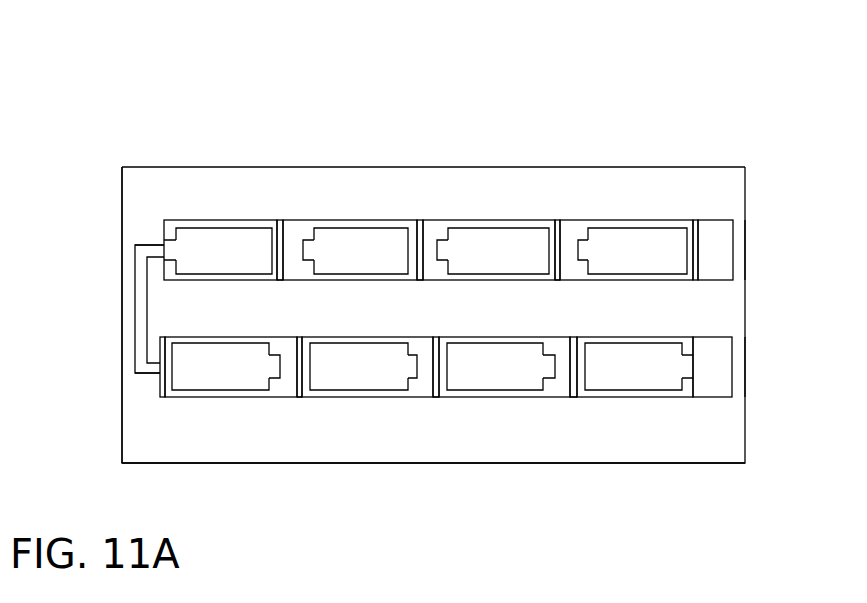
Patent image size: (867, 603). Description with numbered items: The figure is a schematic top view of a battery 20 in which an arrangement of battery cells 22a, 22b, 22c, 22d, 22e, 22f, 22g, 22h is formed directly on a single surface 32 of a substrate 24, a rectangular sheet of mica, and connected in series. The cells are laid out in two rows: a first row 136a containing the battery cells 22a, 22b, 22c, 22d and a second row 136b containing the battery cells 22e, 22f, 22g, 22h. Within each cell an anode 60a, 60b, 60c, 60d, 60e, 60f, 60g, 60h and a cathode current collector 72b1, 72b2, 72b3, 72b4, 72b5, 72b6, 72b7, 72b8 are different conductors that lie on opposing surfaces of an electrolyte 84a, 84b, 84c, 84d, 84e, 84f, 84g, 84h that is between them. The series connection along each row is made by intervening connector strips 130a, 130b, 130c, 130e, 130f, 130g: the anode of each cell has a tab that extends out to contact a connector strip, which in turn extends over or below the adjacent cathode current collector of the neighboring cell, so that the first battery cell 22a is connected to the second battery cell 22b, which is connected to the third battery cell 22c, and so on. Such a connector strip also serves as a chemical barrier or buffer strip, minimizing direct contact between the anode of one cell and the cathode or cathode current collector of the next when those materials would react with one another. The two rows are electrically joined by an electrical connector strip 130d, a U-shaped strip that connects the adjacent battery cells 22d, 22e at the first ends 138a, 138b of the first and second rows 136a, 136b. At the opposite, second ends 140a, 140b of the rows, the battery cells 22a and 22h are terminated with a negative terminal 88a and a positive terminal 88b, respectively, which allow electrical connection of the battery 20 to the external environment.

The battery 20 is at (740, 71).
The substrate 24 is at (163, 455).
The substrate surface 32 is at (465, 181).
The first row 136a is at (617, 448).
The second row 136b is at (203, 193).
The first end of first row 138a is at (126, 386).
The first end of second row 138b is at (140, 221).
The electrical connector strip 130d is at (148, 278).
The first battery cell 22a is at (649, 384).
The second battery cell 22b is at (505, 384).
The third battery cell 22c is at (367, 384).
The battery cell 22d is at (231, 383).
The battery cell 22e is at (220, 243).
The battery cell 22f is at (350, 242).
The battery cell 22g is at (489, 242).
The battery cell 22h is at (633, 242).
The anode 60a is at (615, 378).
The anode 60b is at (477, 378).
The anode 60c is at (342, 378).
The anode 60d is at (202, 378).
The anode 60e is at (206, 261).
The anode 60f is at (345, 261).
The anode 60g is at (480, 261).
The anode 60h is at (619, 261).
The electrolyte 84a is at (665, 340).
The electrolyte 84b is at (520, 343).
The electrolyte 84c is at (379, 343).
The electrolyte 84d is at (251, 338).
The electrolyte 84e is at (237, 276).
The electrolyte 84f is at (366, 277).
The electrolyte 84g is at (505, 277).
The electrolyte 84h is at (655, 277).
The cathode current collector 72b1 is at (576, 337).
The cathode current collector 72b2 is at (436, 337).
The cathode current collector 72b3 is at (299, 337).
The cathode current collector 72b4 is at (158, 338).
The cathode current collector 72b5 is at (280, 220).
The cathode current collector 72b6 is at (420, 220).
The cathode current collector 72b7 is at (558, 220).
The cathode current collector 72b8 is at (698, 221).
The connector strip 130a is at (573, 398).
The connector strip 130b is at (435, 398).
The connector strip 130c is at (299, 398).
The connector strip 130e is at (282, 281).
The connector strip 130f is at (422, 281).
The connector strip 130g is at (560, 281).
The negative terminal 88a is at (733, 392).
The positive terminal 88b is at (733, 266).
The second end of first row 140a is at (770, 365).
The second end of second row 140b is at (760, 250).